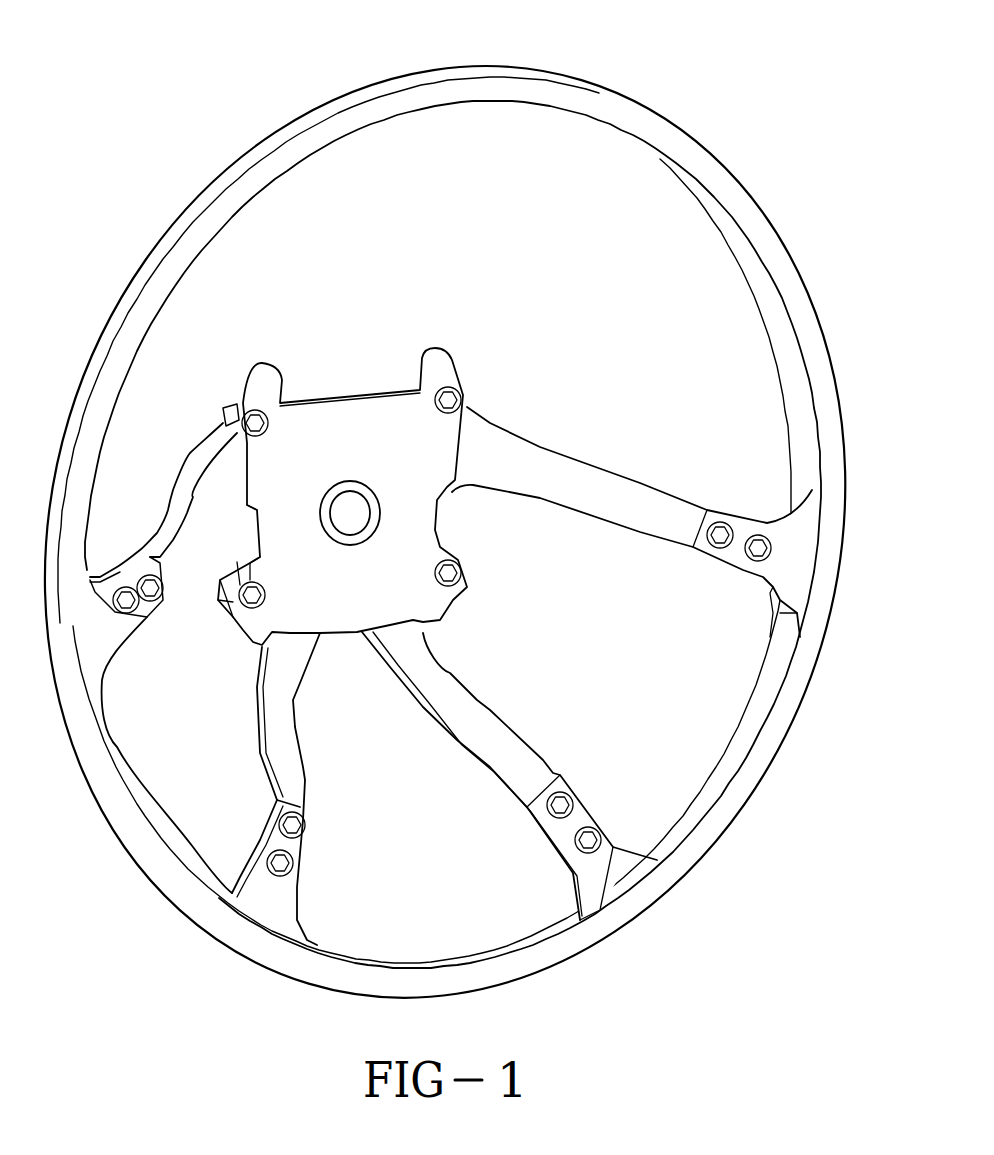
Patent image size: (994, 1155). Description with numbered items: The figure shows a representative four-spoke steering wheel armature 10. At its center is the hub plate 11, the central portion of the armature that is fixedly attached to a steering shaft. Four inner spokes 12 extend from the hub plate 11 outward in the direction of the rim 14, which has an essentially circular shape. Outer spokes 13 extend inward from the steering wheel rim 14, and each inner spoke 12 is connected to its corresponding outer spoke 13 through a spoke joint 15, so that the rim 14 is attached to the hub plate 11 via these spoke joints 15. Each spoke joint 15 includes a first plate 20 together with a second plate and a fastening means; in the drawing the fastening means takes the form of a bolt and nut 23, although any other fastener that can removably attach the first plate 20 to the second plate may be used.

The steering wheel armature 10 is at (176, 108).
The hub plate 11 is at (384, 418).
The inner spoke 12 is at (550, 470).
The outer spoke 13 is at (273, 910).
The rim 14 is at (710, 183).
The spoke joint 15 is at (262, 838).
The first plate 20 is at (277, 843).
The nut 23 is at (300, 827).